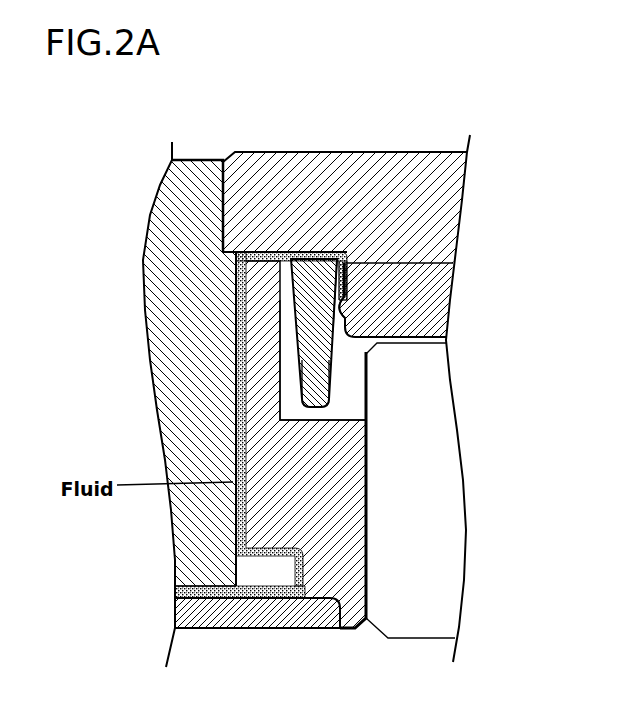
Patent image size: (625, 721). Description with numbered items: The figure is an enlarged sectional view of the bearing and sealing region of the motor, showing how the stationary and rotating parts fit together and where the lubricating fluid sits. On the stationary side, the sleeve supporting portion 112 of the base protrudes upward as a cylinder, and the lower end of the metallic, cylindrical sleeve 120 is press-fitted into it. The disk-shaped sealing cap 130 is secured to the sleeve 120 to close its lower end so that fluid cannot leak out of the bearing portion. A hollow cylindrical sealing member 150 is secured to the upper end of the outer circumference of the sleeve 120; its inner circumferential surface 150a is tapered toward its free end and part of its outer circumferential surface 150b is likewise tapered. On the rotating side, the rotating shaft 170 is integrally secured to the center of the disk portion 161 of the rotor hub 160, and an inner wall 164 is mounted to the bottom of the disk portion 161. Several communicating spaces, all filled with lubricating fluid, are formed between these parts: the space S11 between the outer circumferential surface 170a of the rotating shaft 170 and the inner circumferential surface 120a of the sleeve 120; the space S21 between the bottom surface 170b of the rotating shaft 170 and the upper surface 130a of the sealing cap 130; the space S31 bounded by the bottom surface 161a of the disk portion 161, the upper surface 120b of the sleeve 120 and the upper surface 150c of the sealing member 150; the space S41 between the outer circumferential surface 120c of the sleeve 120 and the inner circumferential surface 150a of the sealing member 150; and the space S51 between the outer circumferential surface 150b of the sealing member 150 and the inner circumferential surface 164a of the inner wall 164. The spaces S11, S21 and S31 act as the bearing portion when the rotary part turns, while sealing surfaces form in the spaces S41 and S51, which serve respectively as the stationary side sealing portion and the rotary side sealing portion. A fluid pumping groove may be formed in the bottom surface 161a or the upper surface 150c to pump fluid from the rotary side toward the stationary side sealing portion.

The sleeve supporting portion 112 is at (410, 490).
The sleeve 120 is at (367, 538).
The inner circumferential surface of the sleeve 120a is at (274, 447).
The upper surface of the sleeve 120b is at (258, 252).
The outer circumferential surface of the sleeve 120c is at (278, 352).
The sealing cap 130 is at (250, 630).
The upper surface of the sealing cap 130a is at (215, 602).
The sealing member 150 is at (332, 352).
The inner circumferential surface of the sealing member 150a is at (298, 356).
The outer circumferential surface of the sealing member 150b is at (370, 336).
The upper surface of the sealing member 150c is at (309, 247).
The rotor hub 160 is at (324, 148).
The disk portion 161 is at (380, 176).
The bottom surface of the disk portion 161a is at (349, 258).
The inner wall 164 is at (420, 293).
The inner circumferential surface of the inner wall 164a is at (345, 302).
The rotating shaft 170 is at (193, 433).
The outer circumferential surface of the rotating shaft 170a is at (233, 382).
The bottom surface of the rotating shaft 170b is at (188, 565).
The space between the rotating shaft and the sleeve S11 is at (235, 315).
The space between the rotating shaft and the sealing cap S21 is at (285, 592).
The space between the disk portion, sleeve and sealing member S31 is at (277, 251).
The stationary side sealing space S41 is at (237, 298).
The rotary side sealing space S51 is at (348, 264).